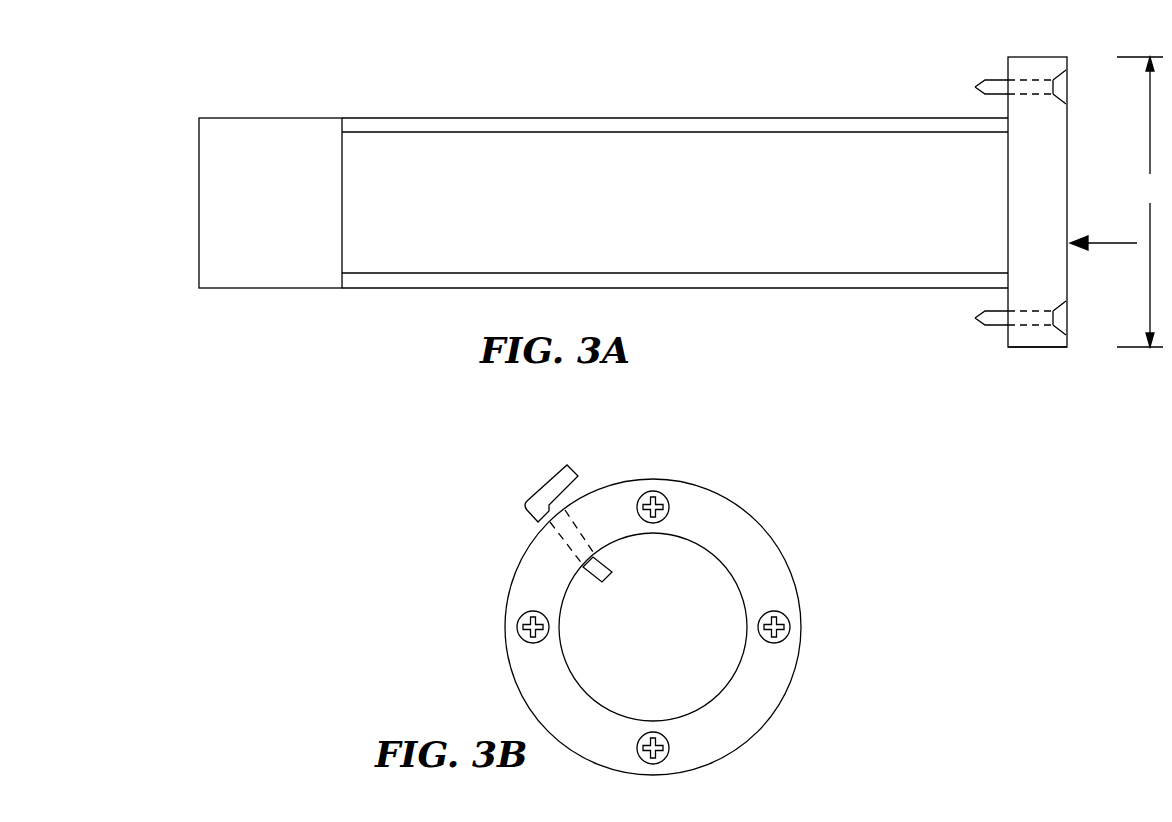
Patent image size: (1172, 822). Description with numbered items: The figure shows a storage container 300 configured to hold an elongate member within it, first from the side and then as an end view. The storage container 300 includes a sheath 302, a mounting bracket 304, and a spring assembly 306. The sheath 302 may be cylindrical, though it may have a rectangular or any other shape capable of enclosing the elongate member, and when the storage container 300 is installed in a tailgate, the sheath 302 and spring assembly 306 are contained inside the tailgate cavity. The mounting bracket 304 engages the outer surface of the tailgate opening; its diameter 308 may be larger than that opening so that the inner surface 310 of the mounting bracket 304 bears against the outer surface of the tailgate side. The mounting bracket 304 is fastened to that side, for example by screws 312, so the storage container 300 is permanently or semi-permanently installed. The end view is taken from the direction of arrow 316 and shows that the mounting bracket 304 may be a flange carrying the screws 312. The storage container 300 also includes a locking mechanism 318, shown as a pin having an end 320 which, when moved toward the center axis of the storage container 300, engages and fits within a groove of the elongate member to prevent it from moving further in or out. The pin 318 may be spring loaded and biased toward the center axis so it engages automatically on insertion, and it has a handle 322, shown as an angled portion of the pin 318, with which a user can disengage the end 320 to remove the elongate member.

In FIG. 3B, the storage container 300 is at (668, 603).
In FIG. 3A, the sheath 302 is at (675, 203).
In FIG. 3A, the mounting bracket 304 is at (1022, 57).
In FIG. 3B, the mounting bracket 304 is at (774, 714).
In FIG. 3A, the spring assembly 306 is at (270, 203).
In FIG. 3A, the diameter 308 is at (1144, 202).
In FIG. 3A, the inner surface 310 is at (1010, 348).
In FIG. 3A, the screws 312 is at (975, 318).
In FIG. 3B, the screws 312 is at (790, 627).
In FIG. 3A, the arrow 316 is at (1103, 259).
In FIG. 3B, the locking mechanism 318 is at (557, 498).
In FIG. 3B, the end 320 is at (602, 583).
In FIG. 3B, the handle 322 is at (573, 465).